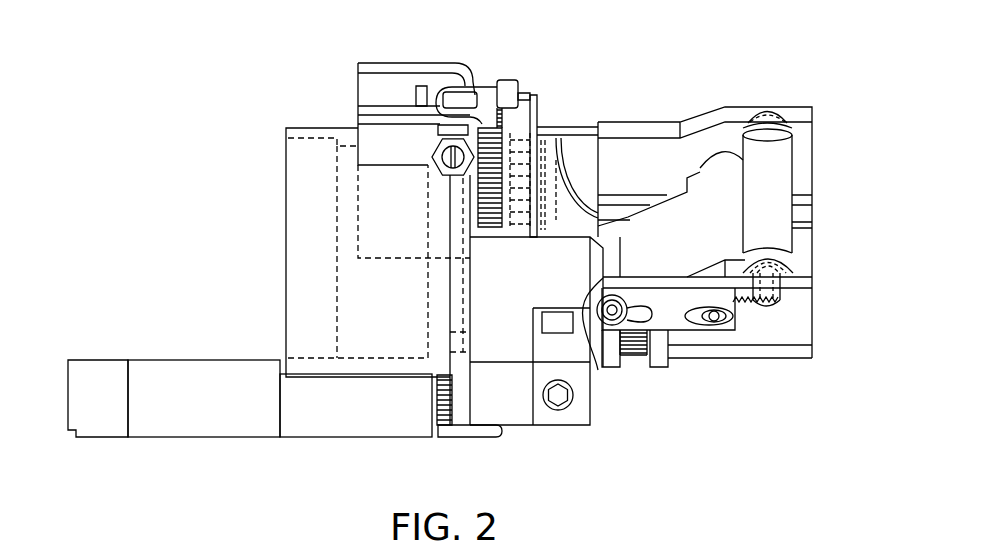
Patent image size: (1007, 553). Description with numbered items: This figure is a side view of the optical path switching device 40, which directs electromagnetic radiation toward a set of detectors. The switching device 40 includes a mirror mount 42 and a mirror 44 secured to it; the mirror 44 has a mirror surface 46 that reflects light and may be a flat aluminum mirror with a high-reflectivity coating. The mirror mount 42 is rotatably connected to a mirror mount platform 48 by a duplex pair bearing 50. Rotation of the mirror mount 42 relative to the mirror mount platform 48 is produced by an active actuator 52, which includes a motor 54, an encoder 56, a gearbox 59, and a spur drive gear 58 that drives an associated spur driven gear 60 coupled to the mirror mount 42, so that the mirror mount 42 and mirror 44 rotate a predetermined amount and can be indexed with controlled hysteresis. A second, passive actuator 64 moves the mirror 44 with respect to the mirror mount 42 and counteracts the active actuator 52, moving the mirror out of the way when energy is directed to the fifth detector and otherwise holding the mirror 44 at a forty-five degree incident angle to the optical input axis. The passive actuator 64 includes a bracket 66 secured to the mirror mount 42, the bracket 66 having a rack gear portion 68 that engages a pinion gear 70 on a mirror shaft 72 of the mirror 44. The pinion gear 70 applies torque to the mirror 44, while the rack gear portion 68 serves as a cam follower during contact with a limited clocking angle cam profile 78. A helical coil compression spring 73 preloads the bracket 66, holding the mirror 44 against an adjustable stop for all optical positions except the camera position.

The switching device 40 is at (248, 78).
The mirror mount 42 is at (650, 155).
The mirror 44 is at (775, 165).
The mirror surface 46 is at (690, 226).
The mirror mount platform 48 is at (300, 200).
The duplex pair bearing 50 is at (527, 165).
The actuator 52 is at (290, 468).
The motor 54 is at (177, 410).
The encoder 56 is at (92, 410).
The spur drive gear 58 is at (455, 437).
The gearbox 59 is at (357, 410).
The spur driven gear 60 is at (475, 137).
The actuator 64 is at (744, 400).
The bracket 66 is at (675, 317).
The rack gear portion 68 is at (745, 303).
The pinion gear 70 is at (780, 300).
The mirror shaft 72 is at (760, 108).
The helical coil compression spring 73 is at (635, 345).
The limited clocking angle cam profile 78 is at (585, 285).